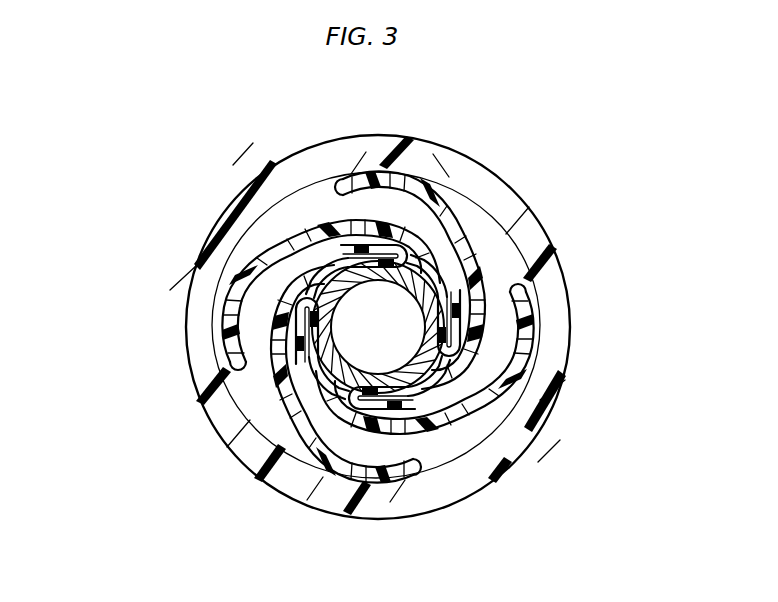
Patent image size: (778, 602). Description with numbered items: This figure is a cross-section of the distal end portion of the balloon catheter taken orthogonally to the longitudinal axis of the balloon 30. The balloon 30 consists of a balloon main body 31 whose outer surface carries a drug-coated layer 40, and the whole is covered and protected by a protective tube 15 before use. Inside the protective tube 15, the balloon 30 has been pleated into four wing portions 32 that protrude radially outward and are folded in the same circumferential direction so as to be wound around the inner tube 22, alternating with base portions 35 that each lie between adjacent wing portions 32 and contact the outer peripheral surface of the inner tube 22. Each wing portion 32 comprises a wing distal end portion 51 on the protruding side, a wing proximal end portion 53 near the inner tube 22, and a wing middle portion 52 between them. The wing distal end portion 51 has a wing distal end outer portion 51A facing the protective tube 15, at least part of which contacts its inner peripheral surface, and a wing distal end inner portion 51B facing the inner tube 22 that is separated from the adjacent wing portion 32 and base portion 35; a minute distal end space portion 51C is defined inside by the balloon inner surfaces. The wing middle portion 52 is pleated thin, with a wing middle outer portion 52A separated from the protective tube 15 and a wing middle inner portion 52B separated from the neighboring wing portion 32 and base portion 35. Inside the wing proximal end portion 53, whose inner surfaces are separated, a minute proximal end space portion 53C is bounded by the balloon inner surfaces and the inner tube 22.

The protective tube 15 is at (212, 218).
The inner tube 22 is at (248, 362).
The balloon 30 is at (262, 385).
The balloon main body 31 is at (93, 399).
The wing portion 32 is at (423, 200).
The base portion 35 is at (222, 232).
The drug-coated layer 40 is at (93, 439).
The wing distal end portion 51 is at (347, 181).
The wing distal end outer portion 51A is at (352, 187).
The wing distal end inner portion 51B is at (338, 273).
The distal end space portion 51C is at (338, 183).
The wing middle portion 52 is at (470, 202).
The wing middle outer portion 52A is at (425, 196).
The wing middle inner portion 52B is at (455, 212).
The wing proximal end portion 53 is at (288, 300).
The proximal end space portion 53C is at (240, 345).